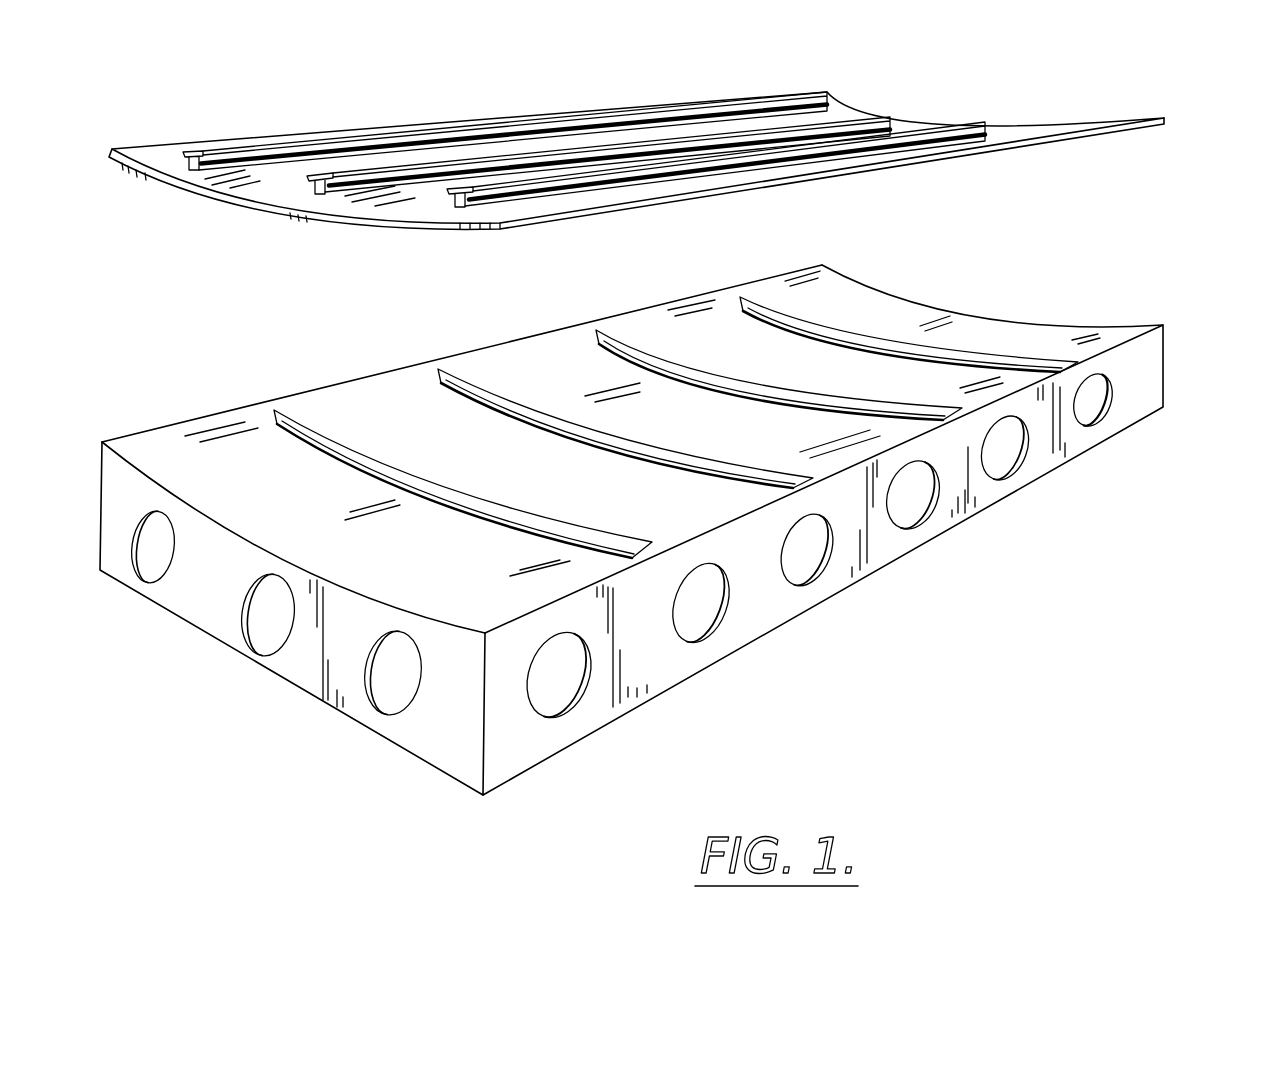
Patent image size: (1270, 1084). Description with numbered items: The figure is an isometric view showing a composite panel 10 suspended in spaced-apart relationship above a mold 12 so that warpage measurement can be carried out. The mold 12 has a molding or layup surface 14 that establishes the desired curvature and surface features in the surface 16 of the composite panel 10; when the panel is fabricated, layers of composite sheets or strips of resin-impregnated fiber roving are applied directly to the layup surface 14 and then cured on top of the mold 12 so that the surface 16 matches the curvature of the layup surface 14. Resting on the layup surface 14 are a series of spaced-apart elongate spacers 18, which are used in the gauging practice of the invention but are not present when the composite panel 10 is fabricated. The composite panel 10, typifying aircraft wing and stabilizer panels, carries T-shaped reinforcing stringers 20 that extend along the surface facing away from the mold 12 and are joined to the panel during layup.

The composite panel 10 is at (1020, 125).
The mold 12 is at (1135, 382).
The layup surface 14 is at (1043, 338).
The surface 16 is at (990, 158).
The spacers 18 is at (616, 450).
The stringers 20 is at (833, 95).